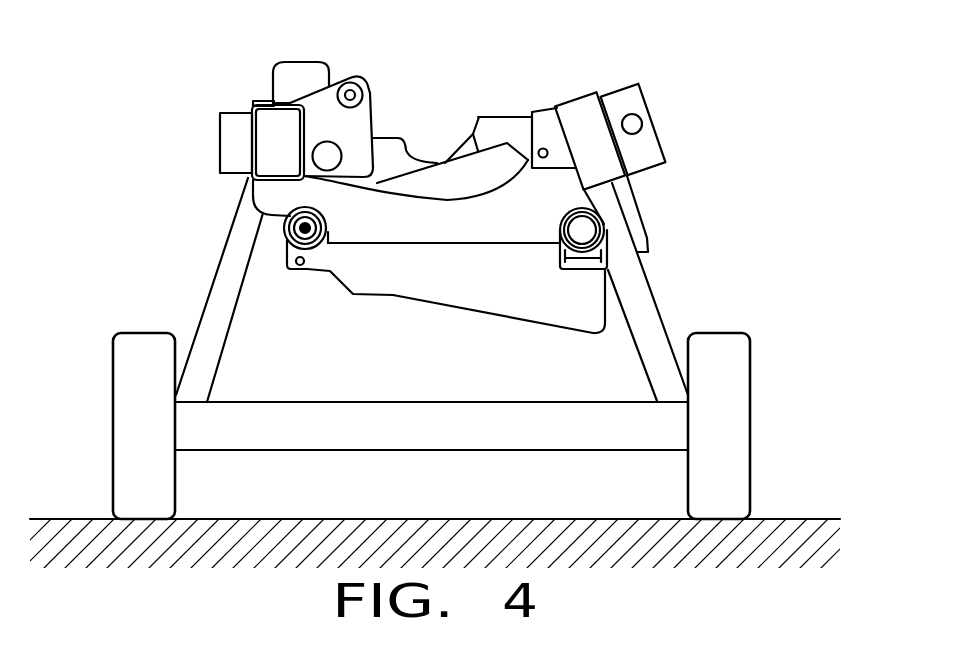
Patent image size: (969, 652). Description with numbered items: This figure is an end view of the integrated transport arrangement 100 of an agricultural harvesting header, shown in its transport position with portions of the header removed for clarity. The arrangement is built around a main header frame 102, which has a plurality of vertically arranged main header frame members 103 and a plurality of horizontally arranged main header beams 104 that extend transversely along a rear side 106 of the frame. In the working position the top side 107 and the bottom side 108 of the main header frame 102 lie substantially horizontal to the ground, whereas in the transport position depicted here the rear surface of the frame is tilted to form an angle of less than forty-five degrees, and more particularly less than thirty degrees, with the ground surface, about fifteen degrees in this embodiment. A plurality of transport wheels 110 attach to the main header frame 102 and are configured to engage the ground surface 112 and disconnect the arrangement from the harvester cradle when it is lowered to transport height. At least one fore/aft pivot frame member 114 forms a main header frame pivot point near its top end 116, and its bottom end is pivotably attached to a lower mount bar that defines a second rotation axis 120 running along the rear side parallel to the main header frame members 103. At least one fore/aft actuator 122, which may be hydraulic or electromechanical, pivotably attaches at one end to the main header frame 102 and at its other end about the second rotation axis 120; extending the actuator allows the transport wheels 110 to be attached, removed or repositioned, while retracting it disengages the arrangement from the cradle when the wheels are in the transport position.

The integrated transport arrangement 100 is at (165, 109).
The main header frame 102 is at (543, 190).
The main header frame members 103 is at (255, 100).
The main header beams 104 is at (410, 247).
The rear side 106 is at (582, 230).
The top side 107 is at (623, 191).
The bottom side 108 is at (248, 178).
The transport wheels 110 is at (113, 350).
The ground 112 is at (793, 519).
The fore/aft pivot frame member 114 is at (508, 293).
The top end 116 is at (595, 253).
The second rotation axis 120 is at (304, 269).
The fore/aft actuator 122 is at (455, 168).